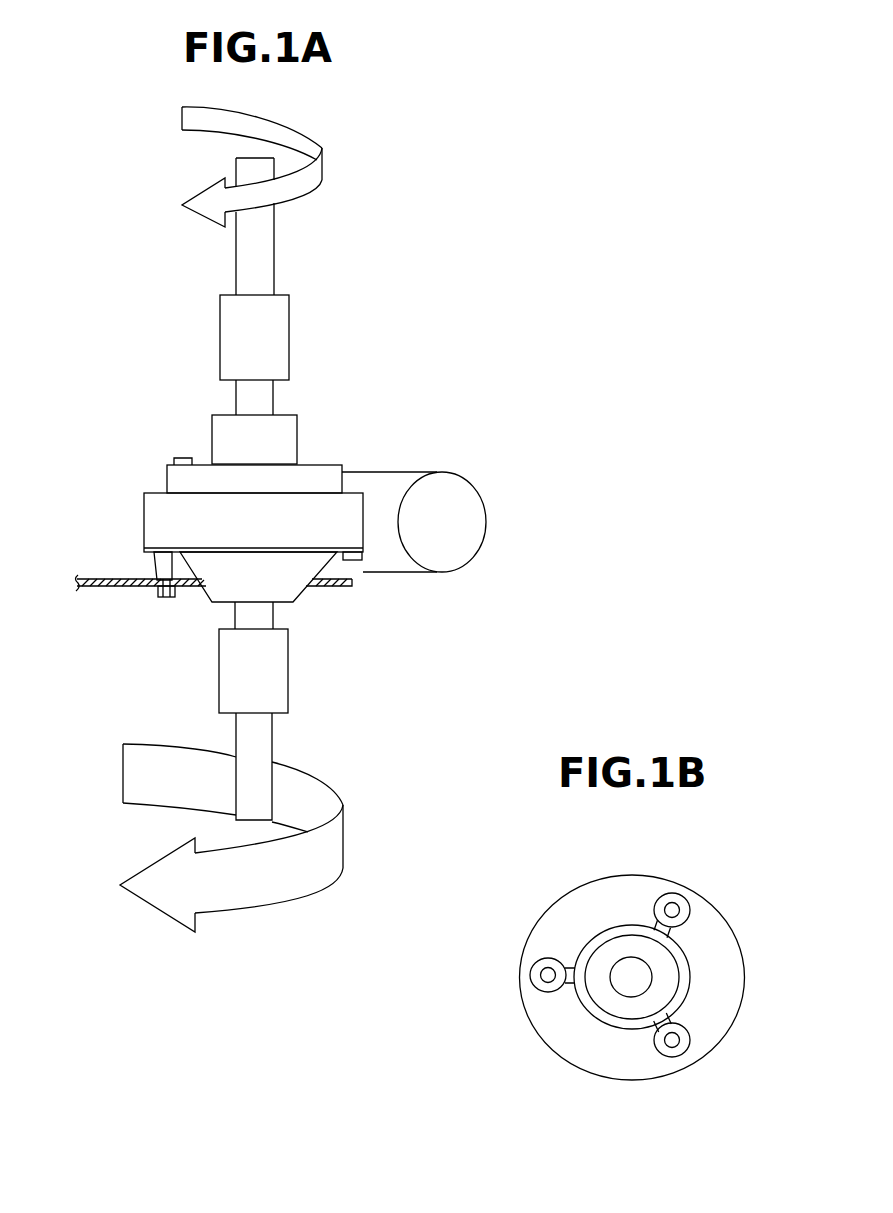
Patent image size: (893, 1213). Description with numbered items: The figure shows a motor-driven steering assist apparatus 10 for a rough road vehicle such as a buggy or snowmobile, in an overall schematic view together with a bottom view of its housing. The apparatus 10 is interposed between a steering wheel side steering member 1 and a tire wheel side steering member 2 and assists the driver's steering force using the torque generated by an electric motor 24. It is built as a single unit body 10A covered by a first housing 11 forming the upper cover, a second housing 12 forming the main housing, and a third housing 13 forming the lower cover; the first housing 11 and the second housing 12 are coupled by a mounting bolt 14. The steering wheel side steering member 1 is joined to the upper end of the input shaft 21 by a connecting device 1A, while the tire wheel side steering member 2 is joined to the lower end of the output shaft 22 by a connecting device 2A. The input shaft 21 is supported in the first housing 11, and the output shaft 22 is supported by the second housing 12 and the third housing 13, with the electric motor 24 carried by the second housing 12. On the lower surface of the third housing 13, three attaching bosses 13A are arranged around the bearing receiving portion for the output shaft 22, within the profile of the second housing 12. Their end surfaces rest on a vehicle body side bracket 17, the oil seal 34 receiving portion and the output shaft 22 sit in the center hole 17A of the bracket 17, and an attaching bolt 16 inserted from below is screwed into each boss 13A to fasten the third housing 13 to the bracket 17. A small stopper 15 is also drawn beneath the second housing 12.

In FIG. 1A, the steering wheel side steering member 1 is at (267, 227).
In FIG. 1A, the connecting device 1A is at (278, 337).
In FIG. 1A, the tire wheel side steering member 2 is at (260, 745).
In FIG. 1A, the connecting device 2A is at (270, 672).
In FIG. 1A, the motor-driven steering assist apparatus 10 is at (100, 420).
In FIG. 1A, the unit body 10A is at (330, 460).
In FIG. 1A, the first housing 11 is at (211, 435).
In FIG. 1A, the second housing 12 is at (172, 520).
In FIG. 1A, the third housing 13 is at (222, 590).
In FIG. 1B, the third housing 13 is at (602, 888).
In FIG. 1A, the attaching boss 13A is at (158, 568).
In FIG. 1B, the attaching boss 13A is at (535, 987).
In FIG. 1A, the mounting bolt 14 is at (183, 460).
In FIG. 1A, the stopper 15 is at (352, 560).
In FIG. 1A, the attaching bolt 16 is at (163, 597).
In FIG. 1A, the vehicle body side bracket 17 is at (98, 590).
In FIG. 1A, the center hole 17A is at (192, 588).
In FIG. 1A, the input shaft 21 is at (263, 397).
In FIG. 1A, the output shaft 22 is at (260, 617).
In FIG. 1B, the output shaft 22 is at (628, 985).
In FIG. 1A, the electric motor 24 is at (475, 523).
In FIG. 1B, the oil seal 34 is at (600, 995).